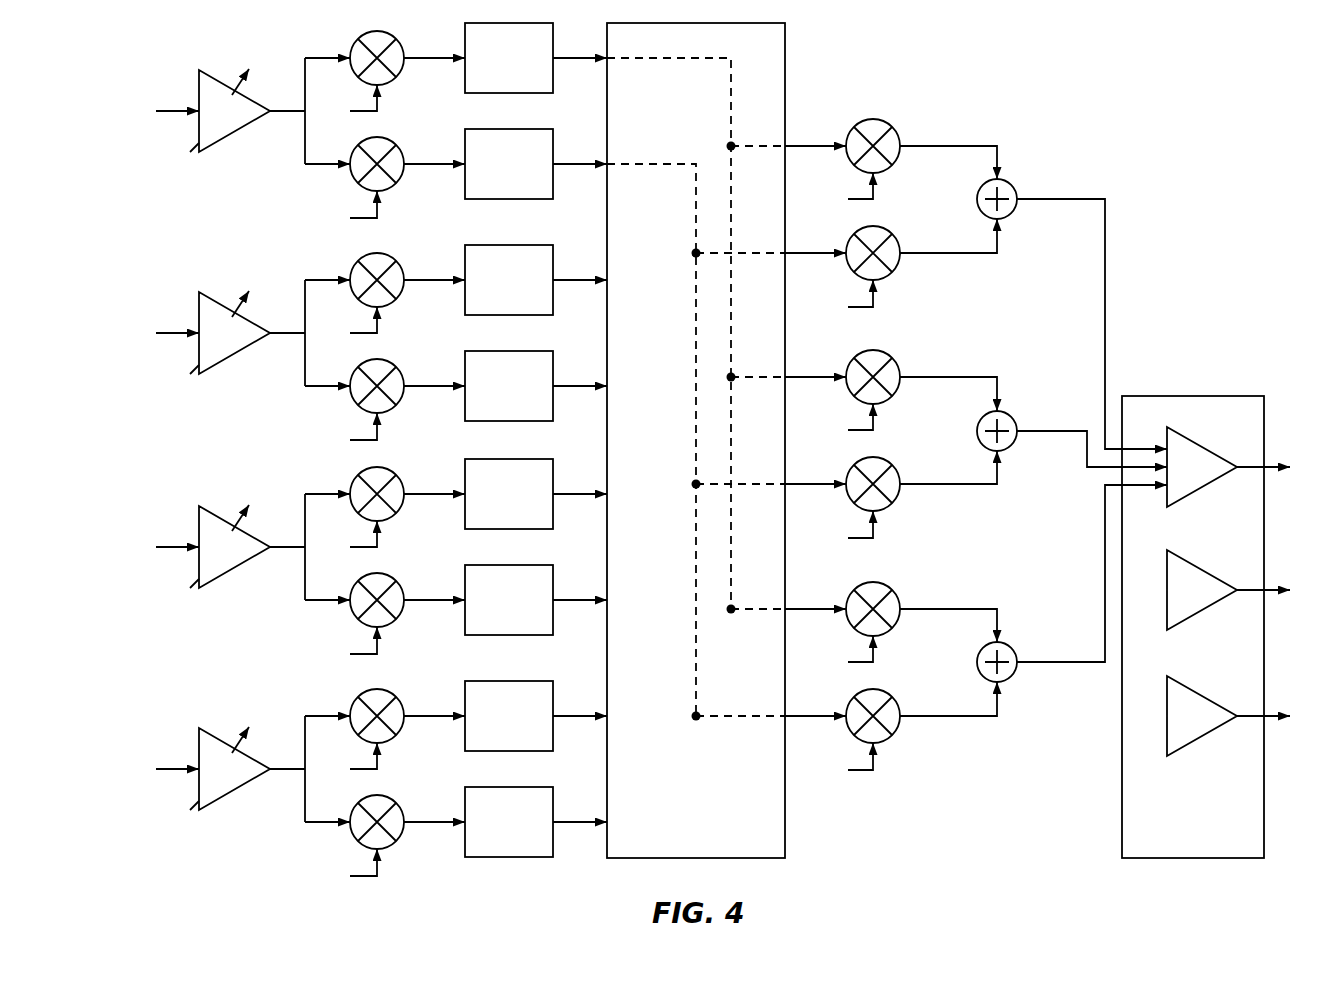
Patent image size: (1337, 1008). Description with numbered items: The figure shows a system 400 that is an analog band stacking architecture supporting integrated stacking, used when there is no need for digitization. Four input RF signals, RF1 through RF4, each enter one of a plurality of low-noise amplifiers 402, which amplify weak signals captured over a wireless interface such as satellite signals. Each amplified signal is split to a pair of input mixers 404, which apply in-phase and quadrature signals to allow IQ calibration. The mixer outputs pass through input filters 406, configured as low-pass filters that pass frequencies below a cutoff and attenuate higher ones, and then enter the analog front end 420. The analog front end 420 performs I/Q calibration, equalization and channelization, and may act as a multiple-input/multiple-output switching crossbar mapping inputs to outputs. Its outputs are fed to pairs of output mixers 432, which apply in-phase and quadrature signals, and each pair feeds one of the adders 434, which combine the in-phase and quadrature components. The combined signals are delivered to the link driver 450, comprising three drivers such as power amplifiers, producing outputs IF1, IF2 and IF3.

The system 400 is at (1232, 74).
The low-noise amplifiers 402 is at (237, 450).
The input mixers 404 is at (401, 426).
The input filters 406 is at (509, 440).
The analog front end 420 is at (681, 818).
The output mixers 432 is at (897, 418).
The adders 434 is at (1021, 416).
The link driver 450 is at (1178, 835).